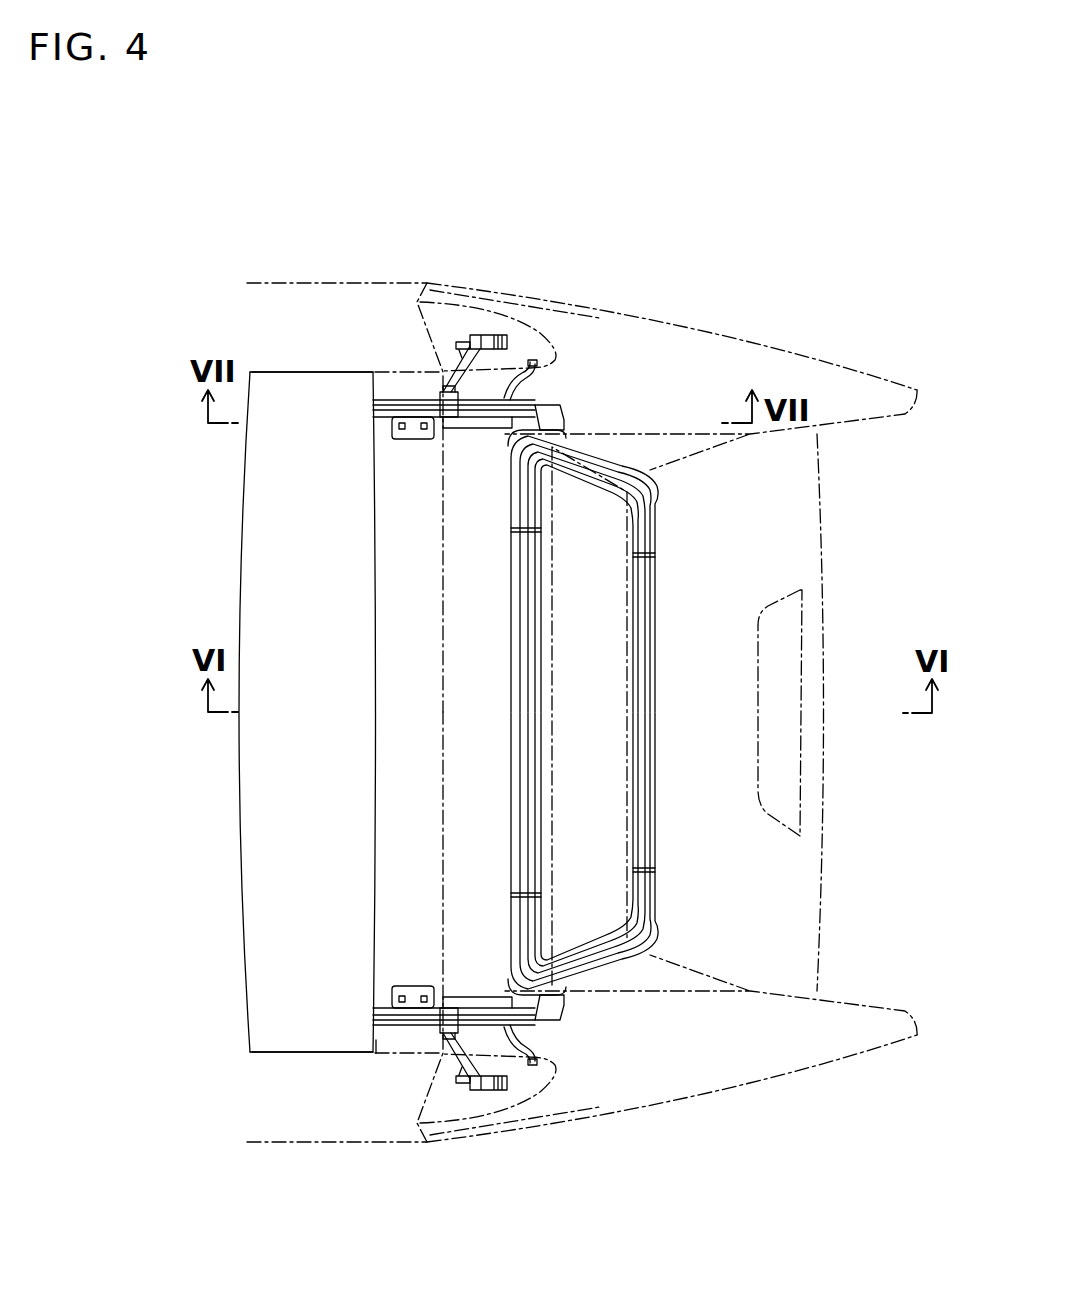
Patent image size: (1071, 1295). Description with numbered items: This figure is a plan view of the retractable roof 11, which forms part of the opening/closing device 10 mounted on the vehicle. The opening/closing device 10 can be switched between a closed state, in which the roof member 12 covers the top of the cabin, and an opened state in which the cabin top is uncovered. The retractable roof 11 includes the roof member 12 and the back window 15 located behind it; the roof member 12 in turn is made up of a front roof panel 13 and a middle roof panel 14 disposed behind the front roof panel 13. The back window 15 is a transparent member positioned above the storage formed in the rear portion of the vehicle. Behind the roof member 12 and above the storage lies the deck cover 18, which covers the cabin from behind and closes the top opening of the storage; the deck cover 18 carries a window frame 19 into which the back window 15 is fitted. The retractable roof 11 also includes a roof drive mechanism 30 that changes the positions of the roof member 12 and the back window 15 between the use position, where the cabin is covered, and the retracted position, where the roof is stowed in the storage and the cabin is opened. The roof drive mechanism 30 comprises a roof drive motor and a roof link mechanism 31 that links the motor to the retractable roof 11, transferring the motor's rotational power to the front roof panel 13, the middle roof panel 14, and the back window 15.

The opening/closing device 10 is at (682, 306).
The retractable roof 11 is at (324, 363).
The roof member 12 is at (288, 371).
The front roof panel 13 is at (310, 1022).
The middle roof panel 14 is at (403, 1032).
The back window 15 is at (587, 893).
The deck cover 18 is at (803, 357).
The window frame 19 is at (621, 681).
The roof drive mechanism 30 is at (482, 1097).
The roof link mechanism 31 is at (488, 1028).